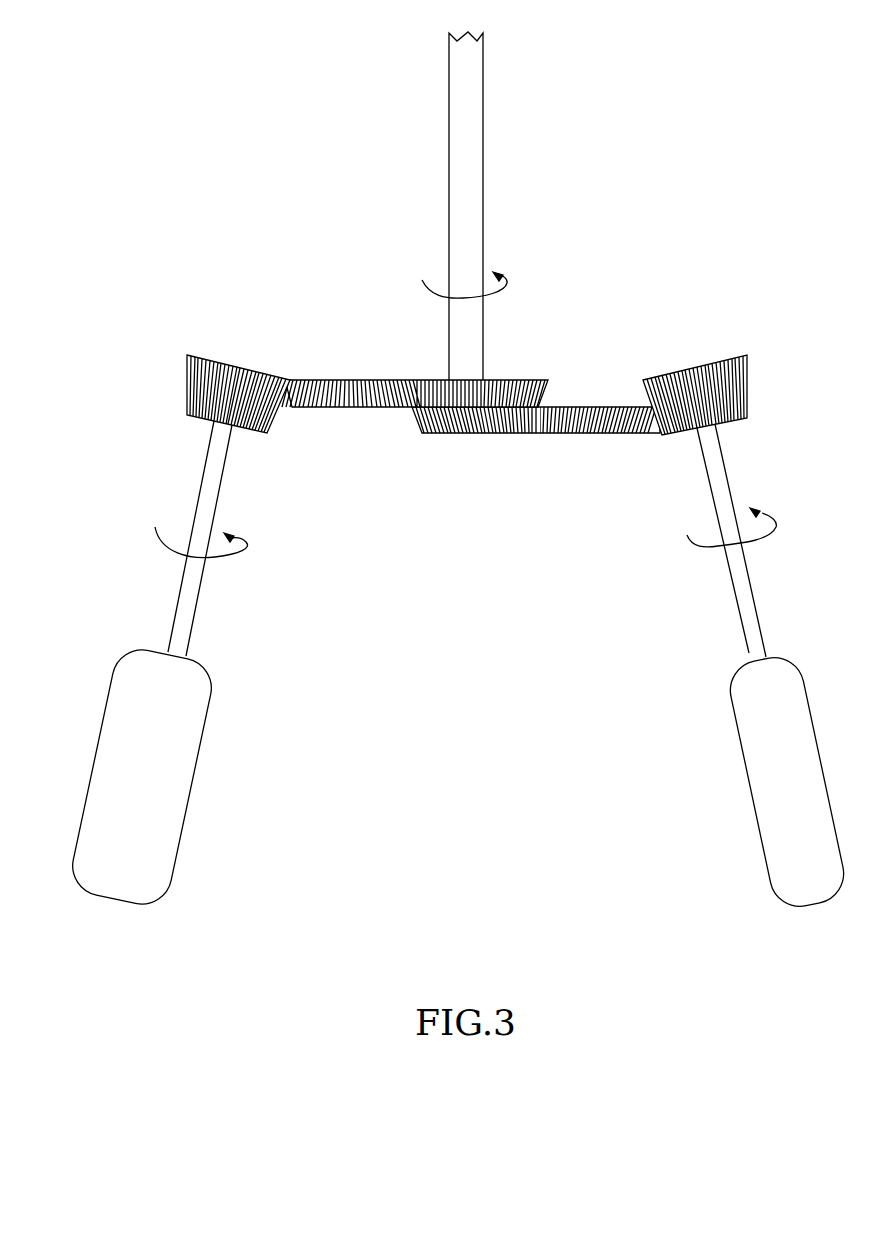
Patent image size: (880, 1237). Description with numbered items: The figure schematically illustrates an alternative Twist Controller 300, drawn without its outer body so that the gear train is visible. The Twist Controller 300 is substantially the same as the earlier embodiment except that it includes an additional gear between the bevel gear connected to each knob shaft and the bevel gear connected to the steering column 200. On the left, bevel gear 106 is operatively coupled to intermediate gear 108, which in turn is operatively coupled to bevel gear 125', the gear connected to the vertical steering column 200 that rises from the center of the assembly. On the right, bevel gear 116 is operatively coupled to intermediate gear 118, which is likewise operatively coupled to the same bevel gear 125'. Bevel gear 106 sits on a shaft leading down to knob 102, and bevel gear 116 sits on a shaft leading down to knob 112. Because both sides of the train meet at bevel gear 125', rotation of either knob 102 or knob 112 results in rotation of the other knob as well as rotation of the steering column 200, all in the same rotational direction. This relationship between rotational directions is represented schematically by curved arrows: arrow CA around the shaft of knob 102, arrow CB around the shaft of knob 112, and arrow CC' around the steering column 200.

The Twist Controller 300 is at (667, 105).
The steering column 200 is at (449, 163).
The bevel gear 106 is at (187, 368).
The intermediate gear 108 is at (342, 380).
The bevel gear 116 is at (706, 364).
The bevel gear 125' is at (476, 463).
The intermediate gear 118 is at (570, 434).
The knob 102 is at (107, 700).
The knob 112 is at (744, 755).